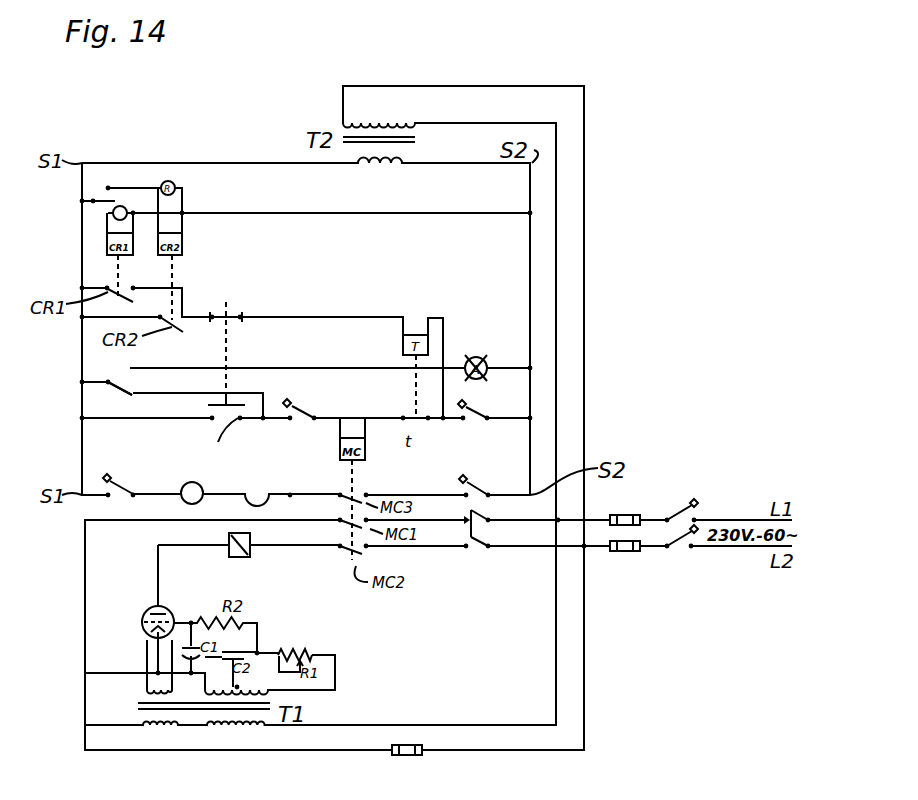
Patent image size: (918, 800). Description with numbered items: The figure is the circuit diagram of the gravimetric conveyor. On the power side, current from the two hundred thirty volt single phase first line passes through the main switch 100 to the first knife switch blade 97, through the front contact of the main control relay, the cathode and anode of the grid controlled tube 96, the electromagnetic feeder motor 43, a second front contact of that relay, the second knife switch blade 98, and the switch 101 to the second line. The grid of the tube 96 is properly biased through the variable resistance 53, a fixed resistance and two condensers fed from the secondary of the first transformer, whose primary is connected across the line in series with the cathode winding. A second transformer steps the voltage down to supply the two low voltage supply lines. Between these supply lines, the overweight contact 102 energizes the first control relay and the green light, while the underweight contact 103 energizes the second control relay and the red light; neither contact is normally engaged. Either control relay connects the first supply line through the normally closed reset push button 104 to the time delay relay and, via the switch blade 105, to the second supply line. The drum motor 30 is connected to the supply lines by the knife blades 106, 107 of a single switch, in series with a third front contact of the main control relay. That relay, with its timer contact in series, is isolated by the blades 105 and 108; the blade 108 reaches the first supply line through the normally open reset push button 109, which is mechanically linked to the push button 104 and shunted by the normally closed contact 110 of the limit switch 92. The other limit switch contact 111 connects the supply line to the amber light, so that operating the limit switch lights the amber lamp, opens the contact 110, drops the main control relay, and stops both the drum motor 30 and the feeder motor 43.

The underweight contact 103 is at (110, 187).
The overweight contact 102 is at (108, 213).
The normally closed reset push button 104 is at (226, 302).
The normally open limit switch contact 111 is at (131, 368).
The limit switch 92 is at (134, 386).
The normally closed limit switch contact 110 is at (134, 396).
The normally open reset push button 109 is at (237, 426).
The switch blade 108 is at (296, 410).
The switch blade 105 is at (470, 412).
The knife blade 106 is at (115, 487).
The motor 30 is at (203, 486).
The knife blade 107 is at (478, 493).
The double blade knife switch blade 97 is at (490, 518).
The double blade knife switch blade 98 is at (490, 545).
The main switch 100 is at (685, 503).
The switch 101 is at (683, 548).
The grid controlled tube 96 is at (146, 614).
The feeder motor 43 is at (238, 560).
The variable resistance 53 is at (292, 636).